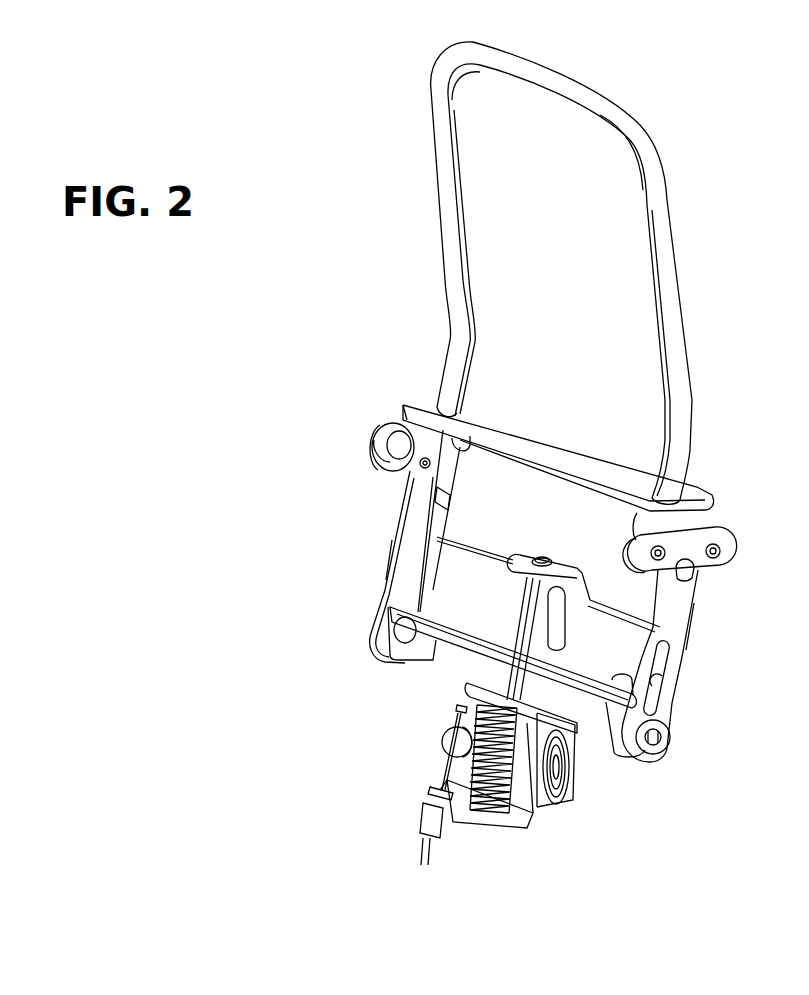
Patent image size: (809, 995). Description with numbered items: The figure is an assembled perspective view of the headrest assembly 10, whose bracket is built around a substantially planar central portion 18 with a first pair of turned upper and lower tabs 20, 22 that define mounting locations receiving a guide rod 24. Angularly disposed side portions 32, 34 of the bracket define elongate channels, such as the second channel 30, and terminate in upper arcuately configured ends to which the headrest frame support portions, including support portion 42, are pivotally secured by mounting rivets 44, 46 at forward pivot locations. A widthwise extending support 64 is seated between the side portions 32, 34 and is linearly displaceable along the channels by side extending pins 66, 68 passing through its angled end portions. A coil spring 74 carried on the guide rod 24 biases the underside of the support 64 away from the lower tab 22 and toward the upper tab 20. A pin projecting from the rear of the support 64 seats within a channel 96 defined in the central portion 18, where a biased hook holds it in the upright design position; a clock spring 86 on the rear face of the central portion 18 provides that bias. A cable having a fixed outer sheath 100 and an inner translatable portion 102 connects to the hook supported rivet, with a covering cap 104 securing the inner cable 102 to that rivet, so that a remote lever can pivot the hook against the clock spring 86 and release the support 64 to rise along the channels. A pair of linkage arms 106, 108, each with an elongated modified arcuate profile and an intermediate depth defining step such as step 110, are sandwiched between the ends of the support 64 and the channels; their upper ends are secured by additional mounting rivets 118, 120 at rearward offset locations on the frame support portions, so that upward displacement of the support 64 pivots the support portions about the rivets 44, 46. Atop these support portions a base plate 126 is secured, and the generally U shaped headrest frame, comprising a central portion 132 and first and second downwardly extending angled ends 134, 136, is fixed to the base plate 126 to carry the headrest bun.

The headrest assembly 10 is at (305, 345).
The central portion 18 is at (480, 570).
The upper tab 20 is at (523, 557).
The lower tab 22 is at (490, 827).
The guide rod 24 is at (527, 607).
The second channel 30 is at (667, 677).
The first side portion 32 is at (408, 510).
The second side portion 34 is at (673, 622).
The headrest frame support portion 42 is at (693, 540).
The mounting rivet 44 is at (400, 452).
The mounting rivet 46 is at (633, 547).
The support 64 is at (470, 630).
The side extending pin 66 is at (405, 642).
The side extending pin 68 is at (663, 743).
The coil spring 74 is at (537, 807).
The clock spring 86 is at (567, 760).
The channel 96 is at (553, 622).
The outer sheath 100 is at (430, 813).
The inner translatable portion 102 is at (440, 790).
The covering cap 104 is at (447, 742).
The linkage arm 106 is at (380, 575).
The linkage arm 108 is at (645, 685).
The step 110 is at (447, 500).
The mounting rivet 118 is at (483, 450).
The mounting rivet 120 is at (723, 555).
The base plate 126 is at (568, 462).
The central portion 132 is at (548, 77).
The first downwardly extending end 134 is at (443, 207).
The second downwardly extending end 136 is at (670, 320).